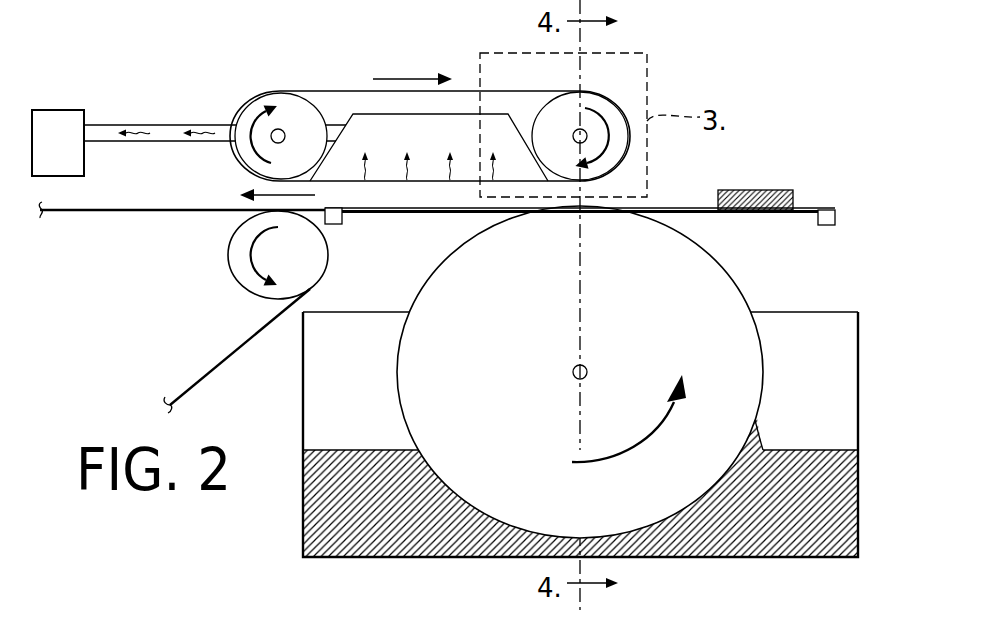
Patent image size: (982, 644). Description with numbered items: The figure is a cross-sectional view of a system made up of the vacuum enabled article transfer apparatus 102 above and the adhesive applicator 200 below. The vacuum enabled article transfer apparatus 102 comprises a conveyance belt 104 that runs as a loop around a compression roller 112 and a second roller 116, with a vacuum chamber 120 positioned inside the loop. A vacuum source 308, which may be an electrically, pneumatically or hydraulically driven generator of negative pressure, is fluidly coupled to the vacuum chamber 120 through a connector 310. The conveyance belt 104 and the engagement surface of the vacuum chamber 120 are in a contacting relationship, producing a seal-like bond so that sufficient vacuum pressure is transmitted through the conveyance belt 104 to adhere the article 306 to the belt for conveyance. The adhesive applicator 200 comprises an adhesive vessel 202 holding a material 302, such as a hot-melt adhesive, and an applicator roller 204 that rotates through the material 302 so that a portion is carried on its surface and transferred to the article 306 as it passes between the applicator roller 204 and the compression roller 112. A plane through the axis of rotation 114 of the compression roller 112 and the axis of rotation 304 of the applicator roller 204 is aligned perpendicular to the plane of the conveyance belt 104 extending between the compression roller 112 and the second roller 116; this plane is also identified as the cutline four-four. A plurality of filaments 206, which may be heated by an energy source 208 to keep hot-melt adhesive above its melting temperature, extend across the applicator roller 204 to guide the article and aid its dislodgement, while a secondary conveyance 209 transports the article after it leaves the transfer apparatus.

The vacuum enabled article transfer apparatus 102 is at (353, 50).
The conveyance belt 104 is at (237, 89).
The compression roller 112 is at (542, 132).
The axis of rotation 114 is at (577, 132).
The second roller 116 is at (273, 100).
The vacuum chamber 120 is at (363, 124).
The adhesive applicator 200 is at (776, 578).
The adhesive vessel 202 is at (860, 358).
The applicator roller 204 is at (718, 278).
The plurality of filaments 206 is at (807, 208).
The energy source 208 is at (832, 227).
The secondary conveyance 209 is at (163, 210).
The material 302 is at (838, 496).
The axis of rotation 304 is at (573, 367).
The article 306 is at (753, 190).
The vacuum source 308 is at (58, 110).
The connector 310 is at (138, 124).